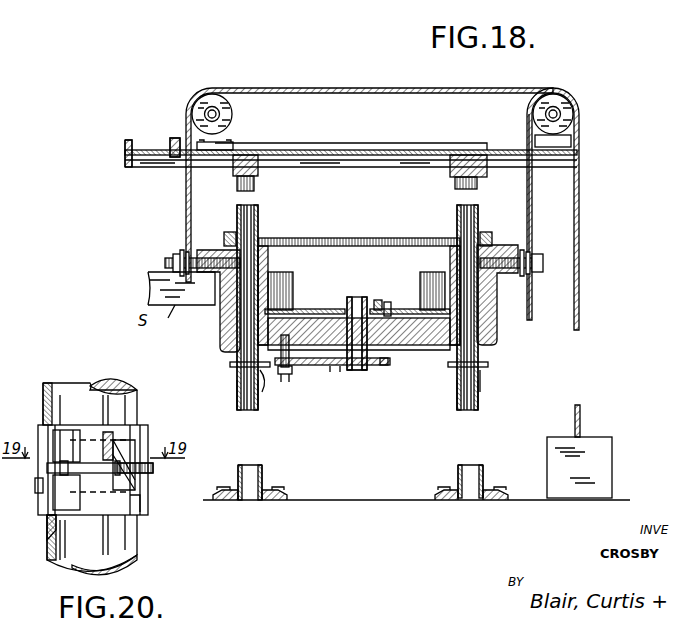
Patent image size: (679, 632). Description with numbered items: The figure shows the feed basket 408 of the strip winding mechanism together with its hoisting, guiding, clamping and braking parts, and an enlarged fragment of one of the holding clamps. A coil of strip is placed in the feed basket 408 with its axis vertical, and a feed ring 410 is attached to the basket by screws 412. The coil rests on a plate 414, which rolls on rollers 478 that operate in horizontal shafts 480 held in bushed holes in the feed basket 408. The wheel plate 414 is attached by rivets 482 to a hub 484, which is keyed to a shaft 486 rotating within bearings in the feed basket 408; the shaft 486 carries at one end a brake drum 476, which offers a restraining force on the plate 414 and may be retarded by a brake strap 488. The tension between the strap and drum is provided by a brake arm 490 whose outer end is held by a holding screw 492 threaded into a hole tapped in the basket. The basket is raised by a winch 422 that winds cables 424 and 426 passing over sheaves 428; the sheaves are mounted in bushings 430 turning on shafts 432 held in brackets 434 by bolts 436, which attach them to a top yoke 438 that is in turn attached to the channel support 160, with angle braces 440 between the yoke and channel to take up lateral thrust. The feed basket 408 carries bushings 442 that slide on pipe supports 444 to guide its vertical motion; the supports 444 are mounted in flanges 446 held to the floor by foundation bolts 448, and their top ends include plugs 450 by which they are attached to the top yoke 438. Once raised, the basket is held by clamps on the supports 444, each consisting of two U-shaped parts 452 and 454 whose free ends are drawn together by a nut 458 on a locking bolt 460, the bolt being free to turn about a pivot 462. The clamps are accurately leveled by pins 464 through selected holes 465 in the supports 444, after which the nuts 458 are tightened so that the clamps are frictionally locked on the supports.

In FIG. 18, the channel support 160 is at (133, 142).
In FIG. 18, the feed basket 408 is at (418, 346).
In FIG. 18, the feed ring 410 is at (316, 243).
In FIG. 18, the screws 412 is at (229, 233).
In FIG. 18, the plate 414 is at (352, 302).
In FIG. 18, the winch 422 is at (612, 462).
In FIG. 18, the cable 424 is at (412, 80).
In FIG. 18, the cable 426 is at (531, 196).
In FIG. 18, the sheaves 428 is at (234, 118).
In FIG. 18, the bushings 430 is at (207, 110).
In FIG. 18, the shafts 432 is at (204, 114).
In FIG. 18, the brackets 434 is at (568, 155).
In FIG. 18, the bolts 436 is at (571, 141).
In FIG. 18, the top yoke 438 is at (357, 168).
In FIG. 18, the angle braces 440 is at (342, 135).
In FIG. 18, the bushings 442 is at (228, 320).
In FIG. 18, the pipe supports 444 is at (480, 402).
In FIG. 20, the pipe supports 444 is at (55, 392).
In FIG. 18, the flanges 446 is at (286, 497).
In FIG. 18, the foundation bolts 448 is at (282, 488).
In FIG. 18, the plugs 450 is at (257, 176).
In FIG. 18, the U-shaped part 452 is at (237, 382).
In FIG. 20, the U-shaped part 452 is at (45, 435).
In FIG. 18, the U-shaped part 454 is at (262, 392).
In FIG. 20, the U-shaped part 454 is at (145, 496).
In FIG. 20, the nut 458 is at (125, 462).
In FIG. 20, the locking bolt 460 is at (150, 473).
In FIG. 20, the pivot 462 is at (72, 440).
In FIG. 18, the pins 464 is at (230, 365).
In FIG. 20, the pins 464 is at (35, 486).
In FIG. 20, the holes 465 is at (48, 532).
In FIG. 18, the brake drum 476 is at (388, 366).
In FIG. 18, the rollers 478 is at (302, 296).
In FIG. 18, the horizontal shafts 480 is at (310, 308).
In FIG. 18, the rivets 482 is at (374, 300).
In FIG. 18, the hub 484 is at (388, 302).
In FIG. 18, the shaft 486 is at (367, 371).
In FIG. 18, the brake strap 488 is at (335, 367).
In FIG. 18, the brake arm 490 is at (318, 366).
In FIG. 18, the holding screw 492 is at (284, 376).